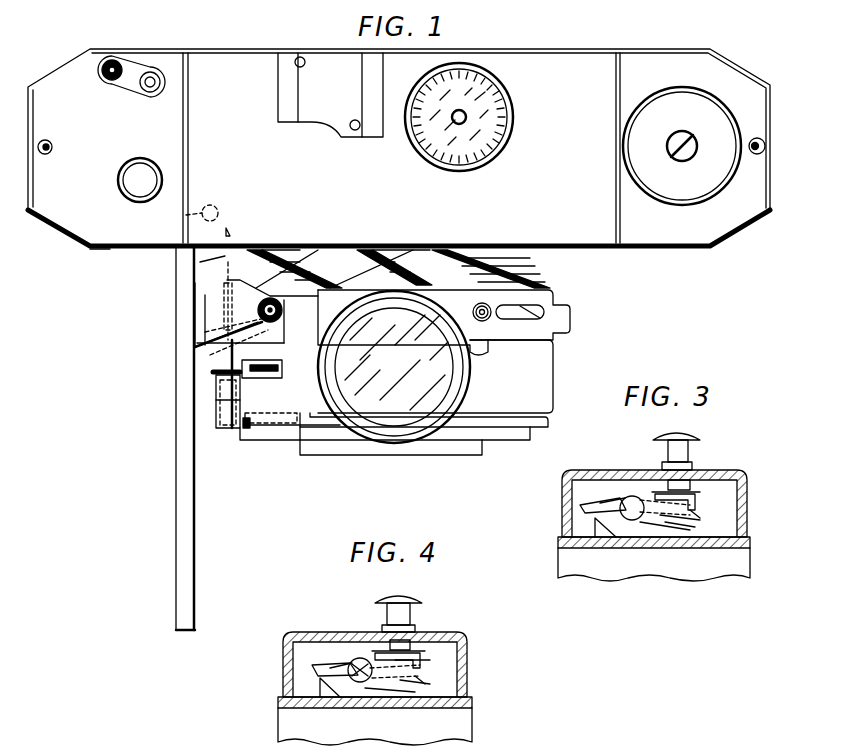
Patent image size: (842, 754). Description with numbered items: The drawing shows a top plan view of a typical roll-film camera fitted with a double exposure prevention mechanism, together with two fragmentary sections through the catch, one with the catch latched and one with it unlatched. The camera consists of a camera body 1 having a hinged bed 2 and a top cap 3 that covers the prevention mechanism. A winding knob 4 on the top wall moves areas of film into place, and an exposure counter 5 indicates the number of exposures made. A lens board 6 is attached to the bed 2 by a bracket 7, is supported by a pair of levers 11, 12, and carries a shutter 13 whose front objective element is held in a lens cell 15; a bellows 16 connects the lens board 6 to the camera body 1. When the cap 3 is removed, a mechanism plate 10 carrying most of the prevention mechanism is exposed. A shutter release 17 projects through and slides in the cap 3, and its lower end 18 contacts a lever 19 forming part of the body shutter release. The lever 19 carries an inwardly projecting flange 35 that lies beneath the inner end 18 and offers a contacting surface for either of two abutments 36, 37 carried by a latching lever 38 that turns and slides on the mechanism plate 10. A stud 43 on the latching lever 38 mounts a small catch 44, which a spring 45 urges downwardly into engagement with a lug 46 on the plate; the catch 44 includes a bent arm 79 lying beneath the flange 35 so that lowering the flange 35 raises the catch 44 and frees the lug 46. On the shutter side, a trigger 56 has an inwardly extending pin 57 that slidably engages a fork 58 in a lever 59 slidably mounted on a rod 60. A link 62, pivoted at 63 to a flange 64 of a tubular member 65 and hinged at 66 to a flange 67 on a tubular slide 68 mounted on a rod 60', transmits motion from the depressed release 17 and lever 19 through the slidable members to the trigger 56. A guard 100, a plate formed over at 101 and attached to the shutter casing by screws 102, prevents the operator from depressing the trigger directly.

In FIG. 1, the camera body 1 is at (110, 250).
In FIG. 1, the hinged bed 2 is at (182, 463).
In FIG. 1, the top cap 3 is at (63, 68).
In FIG. 3, the top cap 3 is at (748, 500).
In FIG. 4, the top cap 3 is at (468, 677).
In FIG. 1, the winding knob 4 is at (705, 95).
In FIG. 1, the exposure counter 5 is at (505, 100).
In FIG. 1, the lens board 6 is at (550, 303).
In FIG. 1, the bracket 7 is at (205, 300).
In FIG. 3, the mechanism plate 10 is at (722, 560).
In FIG. 4, the mechanism plate 10 is at (375, 721).
In FIG. 1, the lever 11 is at (316, 244).
In FIG. 1, the lever 12 is at (405, 244).
In FIG. 1, the shutter 13 is at (540, 382).
In FIG. 1, the lens cell 15 is at (455, 456).
In FIG. 1, the bellows 16 is at (515, 272).
In FIG. 1, the shutter release 17 is at (130, 158).
In FIG. 3, the shutter release 17 is at (690, 437).
In FIG. 4, the shutter release 17 is at (412, 602).
In FIG. 3, the lower end 18 is at (694, 493).
In FIG. 4, the lower end 18 is at (418, 652).
In FIG. 3, the lever 19 is at (710, 515).
In FIG. 4, the lever 19 is at (430, 681).
In FIG. 3, the flange 35 is at (665, 492).
In FIG. 4, the flange 35 is at (385, 652).
In FIG. 3, the abutment 36 is at (680, 522).
In FIG. 4, the abutment 36 is at (425, 686).
In FIG. 3, the abutment 37 is at (636, 500).
In FIG. 4, the abutment 37 is at (360, 664).
In FIG. 3, the latching lever 38 is at (660, 530).
In FIG. 4, the latching lever 38 is at (395, 692).
In FIG. 3, the stud 43 is at (630, 520).
In FIG. 4, the stud 43 is at (355, 683).
In FIG. 3, the catch 44 is at (582, 508).
In FIG. 4, the catch 44 is at (312, 667).
In FIG. 3, the spring 45 is at (600, 502).
In FIG. 4, the spring 45 is at (330, 667).
In FIG. 3, the lug 46 is at (603, 525).
In FIG. 4, the lug 46 is at (325, 690).
In FIG. 1, the trigger 56 is at (250, 432).
In FIG. 1, the pin 57 is at (243, 430).
In FIG. 1, the fork 58 is at (275, 400).
In FIG. 1, the lever 59 is at (230, 360).
In FIG. 1, the rod 60 is at (284, 317).
In FIG. 1, the rod 60' is at (230, 197).
In FIG. 1, the link 62 is at (222, 260).
In FIG. 1, the pivot 63 is at (255, 297).
In FIG. 1, the flange 64 is at (205, 332).
In FIG. 1, the tubular member 65 is at (210, 355).
In FIG. 1, the hinge 66 is at (236, 240).
In FIG. 1, the flange 67 is at (231, 226).
In FIG. 1, the tubular slide 68 is at (184, 216).
In FIG. 3, the bent arm 79 is at (686, 531).
In FIG. 4, the bent arm 79 is at (425, 654).
In FIG. 1, the guard 100 is at (226, 432).
In FIG. 1, the formed-over portion 101 is at (245, 410).
In FIG. 1, the screws 102 is at (262, 400).